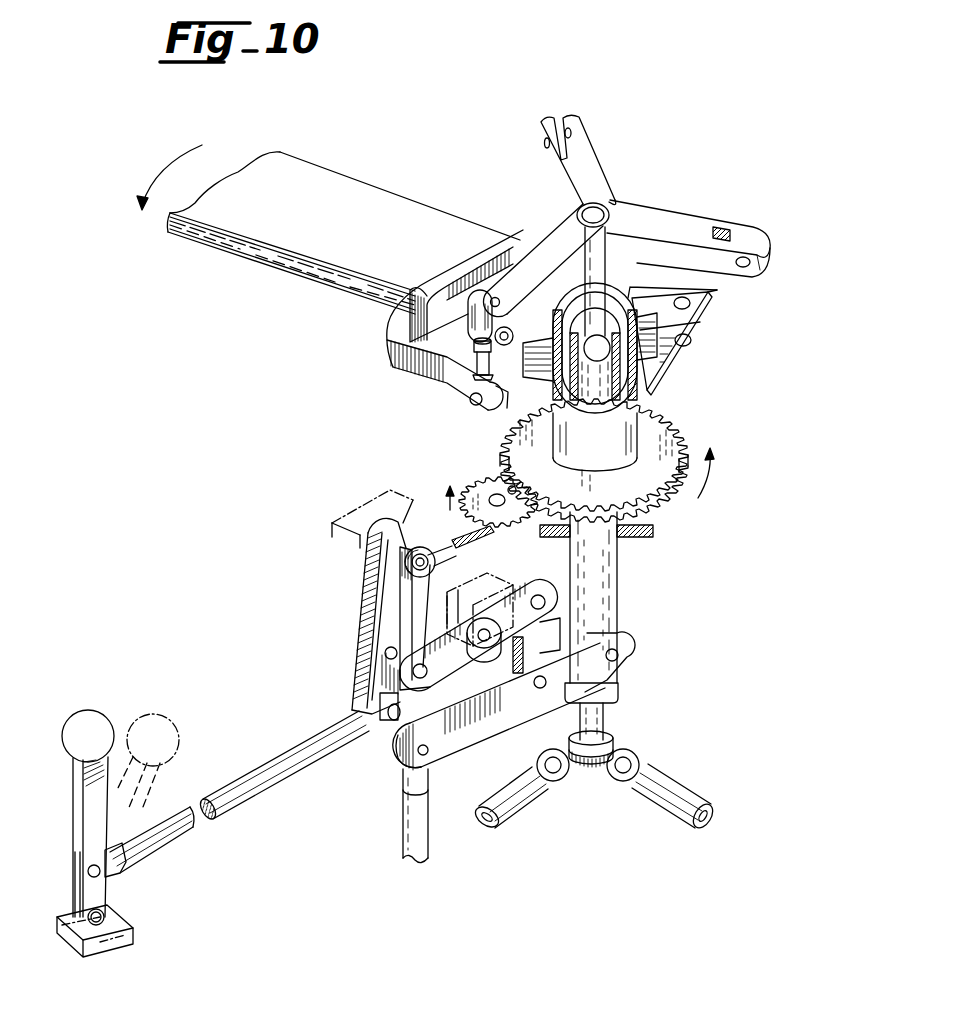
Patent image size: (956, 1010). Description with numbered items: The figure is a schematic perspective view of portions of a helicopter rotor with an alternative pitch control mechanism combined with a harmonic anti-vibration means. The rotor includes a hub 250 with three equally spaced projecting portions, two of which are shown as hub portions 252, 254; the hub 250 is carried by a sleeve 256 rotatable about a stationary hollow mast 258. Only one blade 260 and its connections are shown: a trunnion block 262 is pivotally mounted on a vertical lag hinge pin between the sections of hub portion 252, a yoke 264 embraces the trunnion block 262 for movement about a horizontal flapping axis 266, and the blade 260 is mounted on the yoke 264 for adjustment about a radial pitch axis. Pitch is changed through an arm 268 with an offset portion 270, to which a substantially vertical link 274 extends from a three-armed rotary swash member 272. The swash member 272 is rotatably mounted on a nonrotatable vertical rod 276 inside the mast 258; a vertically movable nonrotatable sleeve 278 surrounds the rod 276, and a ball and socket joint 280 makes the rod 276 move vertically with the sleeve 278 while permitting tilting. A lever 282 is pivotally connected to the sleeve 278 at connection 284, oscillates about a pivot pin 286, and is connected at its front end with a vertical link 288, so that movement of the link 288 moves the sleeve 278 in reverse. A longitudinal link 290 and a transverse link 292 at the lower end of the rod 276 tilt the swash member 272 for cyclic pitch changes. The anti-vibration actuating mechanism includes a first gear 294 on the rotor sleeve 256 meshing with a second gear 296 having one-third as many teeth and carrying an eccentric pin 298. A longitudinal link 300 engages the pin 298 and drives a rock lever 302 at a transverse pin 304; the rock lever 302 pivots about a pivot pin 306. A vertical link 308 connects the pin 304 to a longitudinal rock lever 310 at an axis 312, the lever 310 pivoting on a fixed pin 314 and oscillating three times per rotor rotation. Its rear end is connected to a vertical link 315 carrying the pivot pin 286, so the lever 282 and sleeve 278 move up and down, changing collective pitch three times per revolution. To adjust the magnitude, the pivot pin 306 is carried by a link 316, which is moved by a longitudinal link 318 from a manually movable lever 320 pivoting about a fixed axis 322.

The hub 250 is at (640, 287).
The hub projecting portion 252 is at (540, 307).
The hub projecting portion 254 is at (700, 308).
The sleeve 256 is at (717, 290).
The stationary mast 258 is at (612, 288).
The rotor blade 260 is at (330, 170).
The trunnion block 262 is at (503, 348).
The yoke 264 is at (470, 318).
The flapping axis 266 is at (506, 397).
The arm 268 is at (427, 300).
The offset portion 270 is at (433, 387).
The swash member 272 is at (647, 217).
The link 274 is at (470, 357).
The vertical rod 276 is at (608, 267).
The sleeve 278 is at (613, 566).
The ball and socket joint 280 is at (615, 358).
The lever 282 is at (477, 692).
The pivotal connection 284 is at (623, 647).
The pivot pin 286 is at (540, 688).
The vertical link 288 is at (403, 808).
The longitudinal link 290 is at (507, 780).
The transverse link 292 is at (673, 783).
The first gear 294 is at (518, 437).
The second gear 296 is at (473, 490).
The eccentric pin 298 is at (513, 497).
The longitudinal link 300 is at (447, 553).
The rock lever 302 is at (387, 600).
The transverse horizontal pin 304 is at (430, 555).
The pivot pin 306 is at (385, 654).
The vertical link 308 is at (407, 625).
The rock lever 310 is at (458, 627).
The horizontal transverse axis 312 is at (410, 682).
The fixed pin 314 is at (487, 652).
The vertical link 315 is at (563, 593).
The link 316 is at (367, 573).
The longitudinal link 318 is at (247, 770).
The lever 320 is at (78, 810).
The fixed axis 322 is at (104, 916).